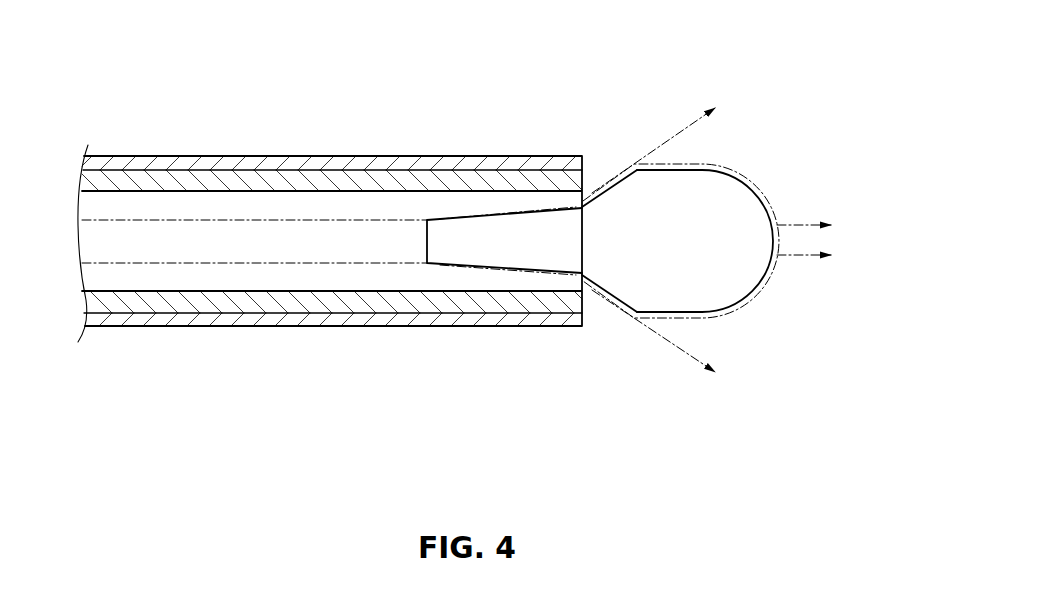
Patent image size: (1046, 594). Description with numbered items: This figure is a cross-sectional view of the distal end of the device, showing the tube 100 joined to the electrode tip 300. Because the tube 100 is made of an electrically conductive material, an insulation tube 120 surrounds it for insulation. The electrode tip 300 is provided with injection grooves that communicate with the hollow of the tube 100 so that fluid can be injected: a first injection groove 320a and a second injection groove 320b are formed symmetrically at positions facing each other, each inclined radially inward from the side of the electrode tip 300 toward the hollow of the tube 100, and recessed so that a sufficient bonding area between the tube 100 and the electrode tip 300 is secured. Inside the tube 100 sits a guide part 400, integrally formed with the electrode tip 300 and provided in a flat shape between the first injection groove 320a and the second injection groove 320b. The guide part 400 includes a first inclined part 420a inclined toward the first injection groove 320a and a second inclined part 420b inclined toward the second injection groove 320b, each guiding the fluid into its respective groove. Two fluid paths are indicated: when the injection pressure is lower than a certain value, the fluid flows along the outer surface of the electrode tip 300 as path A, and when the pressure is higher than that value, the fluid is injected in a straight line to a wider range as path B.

The tube 100 is at (330, 199).
The insulation tube 120 is at (265, 160).
The electrode tip 300 is at (706, 244).
The first injection groove 320a is at (603, 178).
The second injection groove 320b is at (603, 291).
The guide part 400 is at (465, 264).
The first inclined part 420a is at (498, 214).
The second inclined part 420b is at (498, 272).
The path A is at (815, 242).
The path B is at (663, 242).